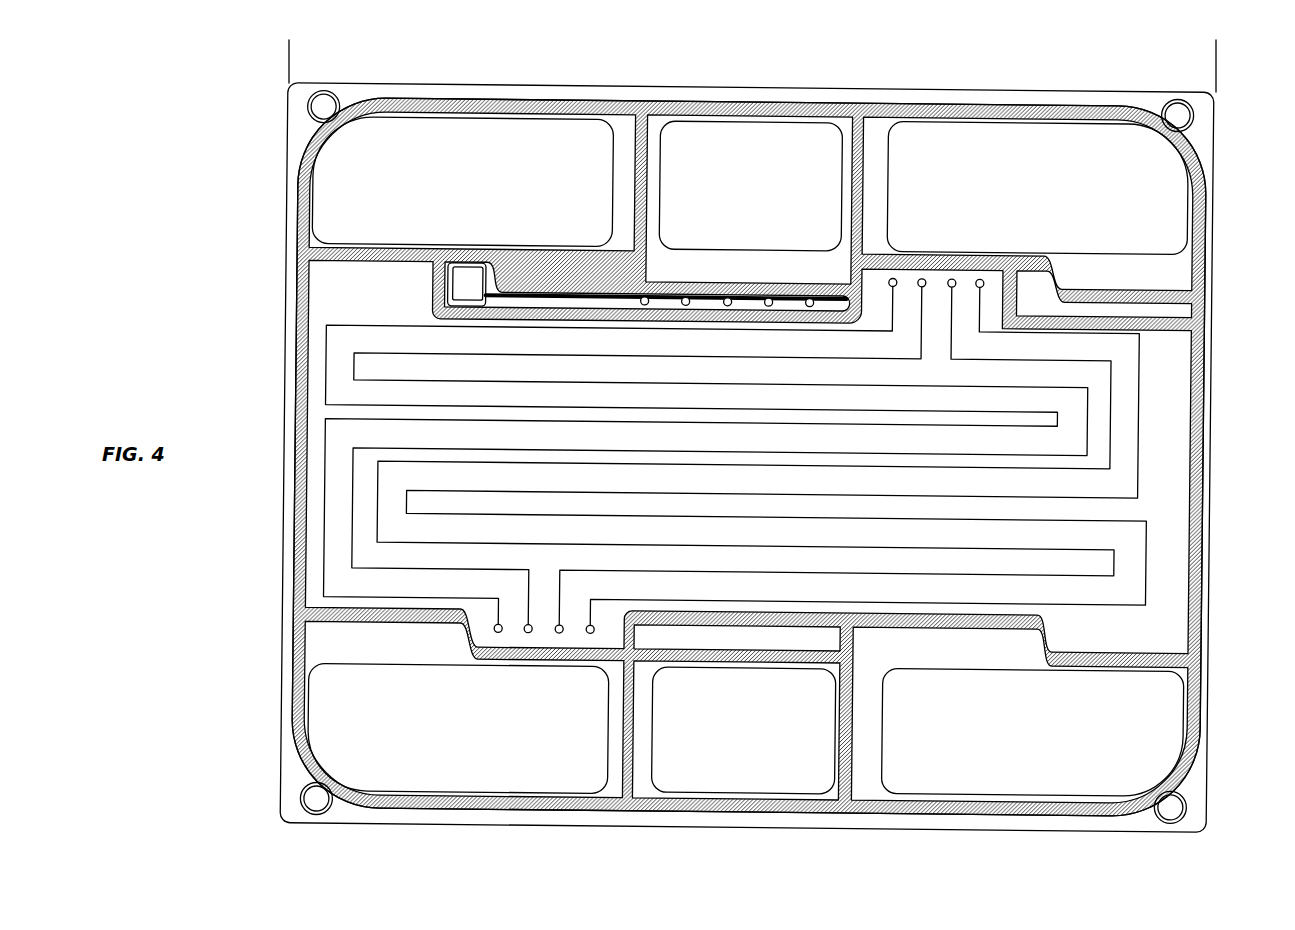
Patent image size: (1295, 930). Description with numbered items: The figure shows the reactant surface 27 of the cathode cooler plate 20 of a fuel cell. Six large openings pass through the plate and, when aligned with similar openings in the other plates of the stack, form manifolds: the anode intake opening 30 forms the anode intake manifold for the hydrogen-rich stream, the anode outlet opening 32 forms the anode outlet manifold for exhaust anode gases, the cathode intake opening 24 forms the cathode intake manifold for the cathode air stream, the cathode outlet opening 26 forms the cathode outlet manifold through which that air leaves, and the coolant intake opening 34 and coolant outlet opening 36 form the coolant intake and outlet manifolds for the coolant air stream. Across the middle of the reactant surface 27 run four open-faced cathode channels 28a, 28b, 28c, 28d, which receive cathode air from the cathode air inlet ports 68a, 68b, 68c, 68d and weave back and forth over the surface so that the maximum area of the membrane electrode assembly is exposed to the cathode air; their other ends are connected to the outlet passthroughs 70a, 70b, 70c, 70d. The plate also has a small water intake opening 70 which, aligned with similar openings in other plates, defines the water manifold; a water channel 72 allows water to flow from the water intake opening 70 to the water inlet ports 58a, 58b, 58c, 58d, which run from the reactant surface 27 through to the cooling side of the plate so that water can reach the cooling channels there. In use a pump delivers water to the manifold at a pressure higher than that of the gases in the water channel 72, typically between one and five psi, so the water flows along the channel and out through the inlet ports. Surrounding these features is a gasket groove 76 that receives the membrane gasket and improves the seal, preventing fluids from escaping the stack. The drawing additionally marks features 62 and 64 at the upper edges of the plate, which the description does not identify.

The cathode cooler plate 20 is at (282, 445).
The cathode intake opening 24 is at (1138, 204).
The cathode outlet opening 26 is at (387, 742).
The reactant surface 27 is at (295, 152).
The cathode channel 28a is at (880, 333).
The cathode channel 28b is at (897, 361).
The cathode channel 28c is at (973, 361).
The cathode channel 28d is at (993, 333).
The anode intake opening 30 is at (480, 196).
The anode outlet opening 32 is at (1047, 748).
The coolant intake opening 34 is at (765, 199).
The coolant outlet opening 36 is at (757, 746).
The water inlet port 58a is at (805, 294).
The water inlet port 58b is at (768, 307).
The water inlet port 58c is at (722, 294).
The water inlet port 58d is at (684, 307).
The right edge 62 is at (1219, 93).
The left edge 64 is at (287, 78).
The cathode air inlet port 68a is at (980, 280).
The cathode air inlet port 68b is at (952, 280).
The cathode air inlet port 68c is at (922, 280).
The cathode air inlet port 68d is at (895, 280).
The water intake opening 70 is at (478, 297).
The outlet passthrough 70a is at (590, 640).
The outlet passthrough 70b is at (559, 640).
The outlet passthrough 70c is at (528, 640).
The outlet passthrough 70d is at (497, 640).
The water channel 72 is at (572, 300).
The gasket groove 76 is at (300, 300).